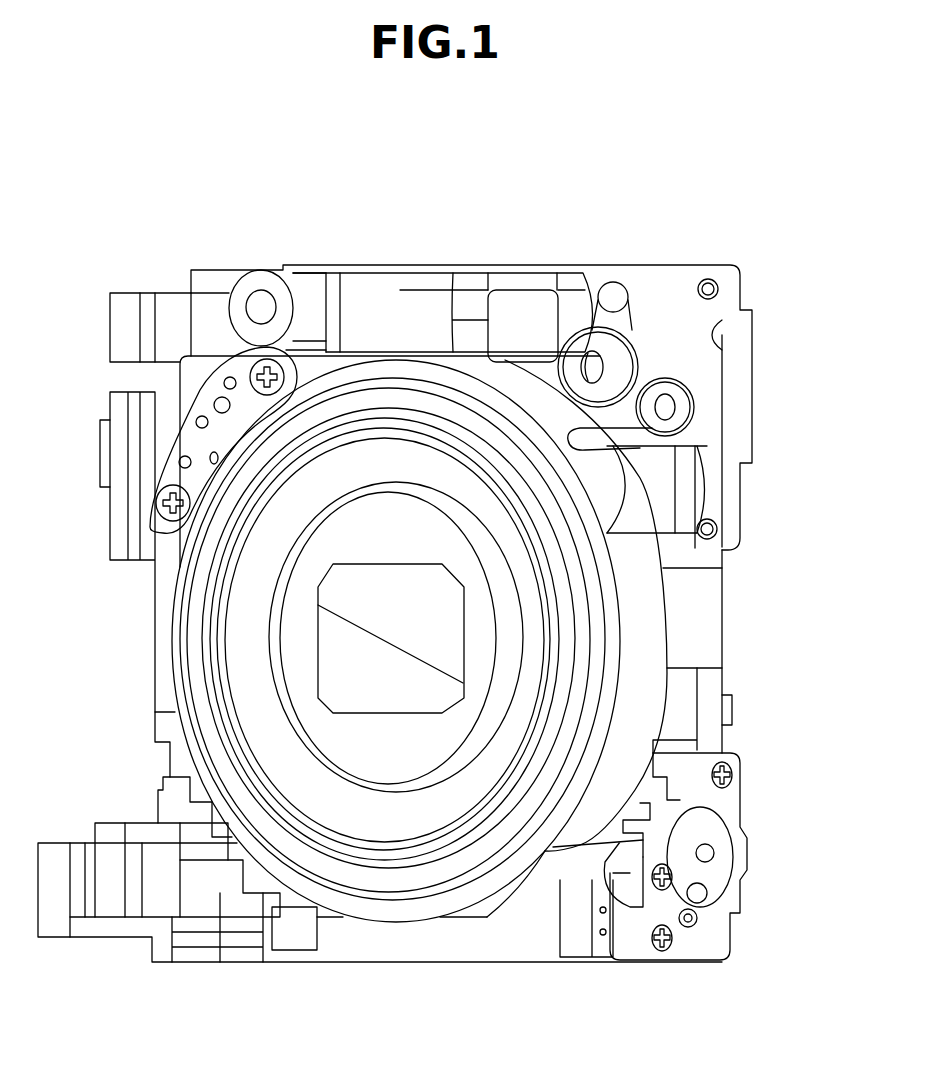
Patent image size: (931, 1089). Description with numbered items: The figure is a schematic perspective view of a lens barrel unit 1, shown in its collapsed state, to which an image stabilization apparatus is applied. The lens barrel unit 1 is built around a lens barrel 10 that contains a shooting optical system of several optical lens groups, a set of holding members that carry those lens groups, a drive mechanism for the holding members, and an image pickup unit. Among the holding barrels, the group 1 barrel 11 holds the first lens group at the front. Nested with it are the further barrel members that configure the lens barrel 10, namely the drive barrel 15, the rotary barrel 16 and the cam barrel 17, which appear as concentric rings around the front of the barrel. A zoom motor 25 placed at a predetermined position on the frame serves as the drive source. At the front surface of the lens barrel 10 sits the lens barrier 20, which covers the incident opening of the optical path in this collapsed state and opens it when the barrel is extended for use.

The lens barrel unit 1 is at (598, 221).
The lens barrel 10 is at (810, 556).
The group 1 barrel 11 is at (538, 599).
The drive barrel 15 is at (585, 628).
The rotary barrel 16 is at (605, 658).
The cam barrel 17 is at (637, 690).
The lens barrier 20 is at (380, 688).
The zoom motor 25 is at (480, 270).